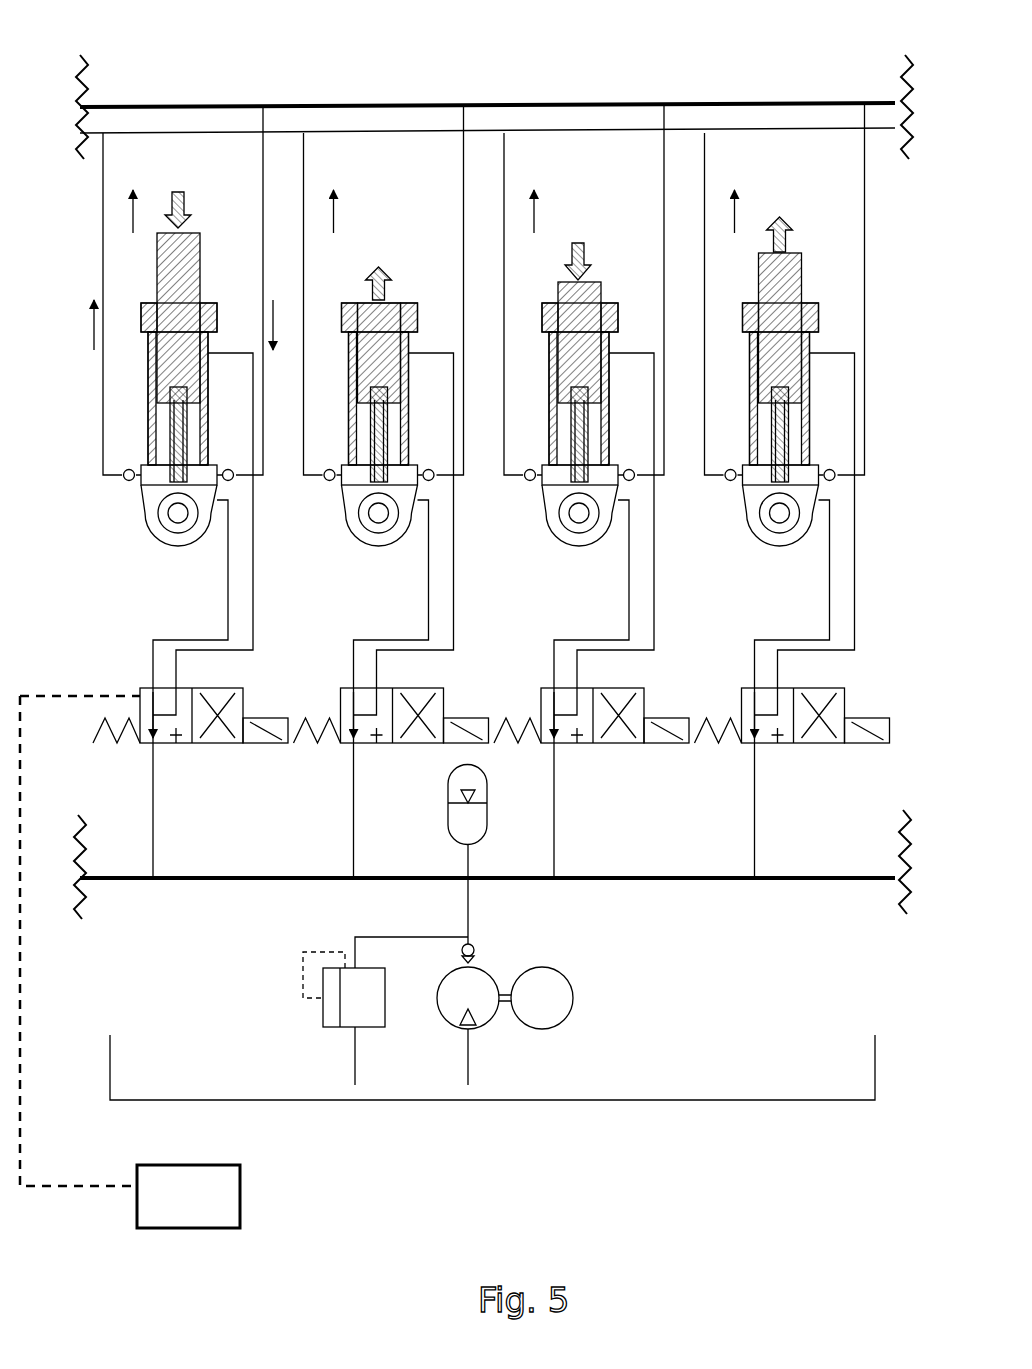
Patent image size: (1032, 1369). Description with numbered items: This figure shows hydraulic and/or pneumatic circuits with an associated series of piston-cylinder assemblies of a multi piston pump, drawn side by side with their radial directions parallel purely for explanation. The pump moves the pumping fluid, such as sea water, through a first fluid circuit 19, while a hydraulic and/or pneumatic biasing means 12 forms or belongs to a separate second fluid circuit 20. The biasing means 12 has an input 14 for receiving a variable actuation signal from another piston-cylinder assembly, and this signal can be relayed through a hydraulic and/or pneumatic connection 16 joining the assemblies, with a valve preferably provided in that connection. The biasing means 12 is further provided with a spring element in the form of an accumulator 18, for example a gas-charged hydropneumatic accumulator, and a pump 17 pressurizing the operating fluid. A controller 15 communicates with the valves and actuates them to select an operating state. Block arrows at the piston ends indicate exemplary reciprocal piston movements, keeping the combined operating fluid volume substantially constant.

The first fluid circuit 19 is at (340, 132).
The biasing means 12 is at (839, 384).
The input 14 is at (839, 470).
The hydraulic and/or pneumatic connection 16 is at (492, 853).
The second fluid circuit 20 is at (235, 877).
The accumulator 18 is at (445, 793).
The pump 17 is at (488, 1048).
The controller 15 is at (201, 1210).